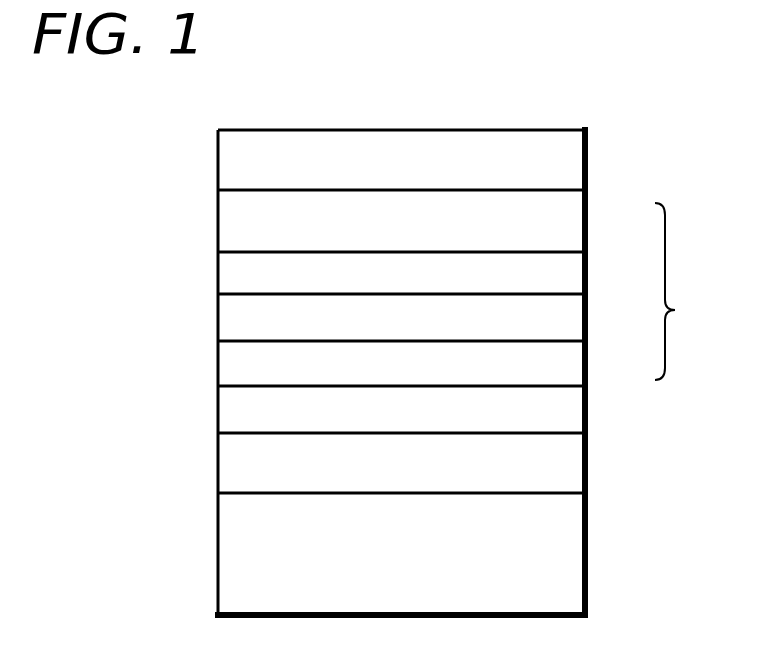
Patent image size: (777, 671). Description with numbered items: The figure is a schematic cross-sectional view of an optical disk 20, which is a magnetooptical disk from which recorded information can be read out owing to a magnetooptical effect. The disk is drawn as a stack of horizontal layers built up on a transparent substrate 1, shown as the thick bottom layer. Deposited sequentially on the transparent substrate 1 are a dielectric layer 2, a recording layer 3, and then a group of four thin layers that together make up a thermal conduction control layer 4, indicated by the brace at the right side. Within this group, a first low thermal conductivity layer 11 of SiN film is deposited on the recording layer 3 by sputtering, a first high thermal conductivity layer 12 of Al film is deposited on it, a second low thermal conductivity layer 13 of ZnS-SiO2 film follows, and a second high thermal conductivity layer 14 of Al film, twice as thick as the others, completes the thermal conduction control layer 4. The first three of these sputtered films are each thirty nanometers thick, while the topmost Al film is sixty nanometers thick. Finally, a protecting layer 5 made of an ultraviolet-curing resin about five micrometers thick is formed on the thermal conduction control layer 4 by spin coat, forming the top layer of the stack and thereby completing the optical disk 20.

The transparent substrate 1 is at (576, 558).
The dielectric layer 2 is at (578, 468).
The recording layer 3 is at (578, 414).
The thermal conduction control layer 4 is at (675, 291).
The protecting layer 5 is at (583, 166).
The first low thermal conductivity layer 11 is at (583, 369).
The first high thermal conductivity layer 12 is at (583, 324).
The second low thermal conductivity layer 13 is at (583, 278).
The second high thermal conductivity layer 14 is at (583, 229).
The optical disk 20 is at (541, 661).